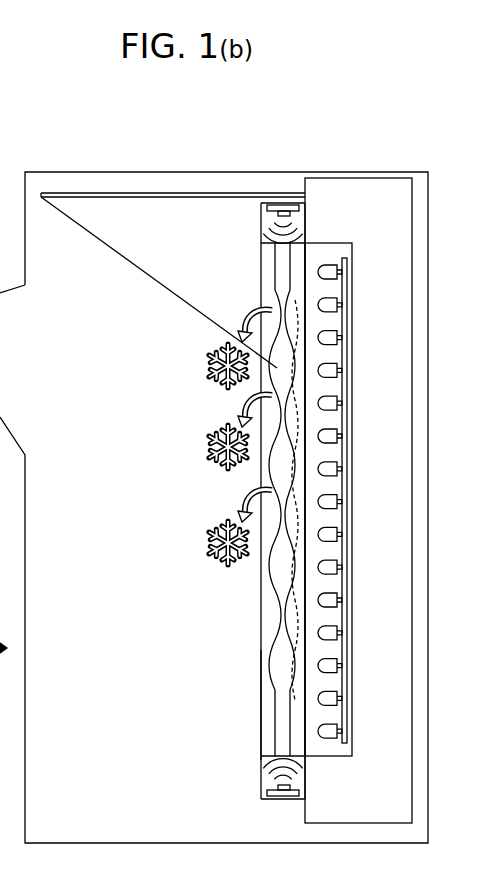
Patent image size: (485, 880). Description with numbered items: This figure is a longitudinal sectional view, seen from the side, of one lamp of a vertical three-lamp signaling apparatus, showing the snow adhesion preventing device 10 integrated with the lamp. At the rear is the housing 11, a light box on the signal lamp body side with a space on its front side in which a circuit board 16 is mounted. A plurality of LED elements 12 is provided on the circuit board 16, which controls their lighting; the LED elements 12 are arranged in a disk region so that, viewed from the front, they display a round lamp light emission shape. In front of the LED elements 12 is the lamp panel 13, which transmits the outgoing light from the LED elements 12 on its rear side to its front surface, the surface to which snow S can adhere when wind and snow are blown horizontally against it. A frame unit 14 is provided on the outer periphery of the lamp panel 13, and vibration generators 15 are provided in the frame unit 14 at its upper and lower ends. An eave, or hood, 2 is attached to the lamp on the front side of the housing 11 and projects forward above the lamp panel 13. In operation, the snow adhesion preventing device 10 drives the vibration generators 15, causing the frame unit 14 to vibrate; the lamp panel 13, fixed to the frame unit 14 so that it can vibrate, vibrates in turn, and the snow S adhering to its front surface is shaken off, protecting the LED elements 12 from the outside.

The eave (hood) 2 is at (145, 193).
The snow adhesion preventing device 10 is at (233, 622).
The housing 11 is at (400, 399).
The LED elements 12 is at (324, 268).
The lamp panel 13 is at (277, 262).
The frame unit 14 is at (261, 708).
The vibration generators 15 is at (268, 213).
The circuit board 16 is at (350, 262).
The snow S is at (204, 367).